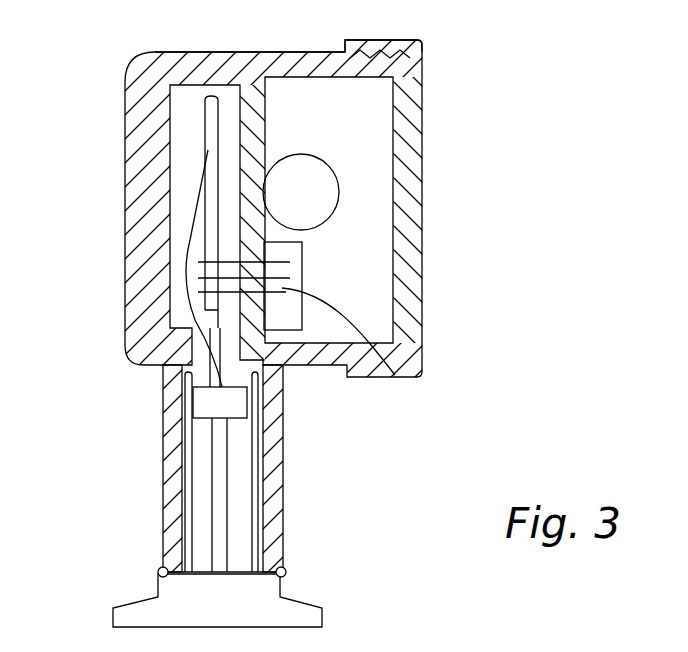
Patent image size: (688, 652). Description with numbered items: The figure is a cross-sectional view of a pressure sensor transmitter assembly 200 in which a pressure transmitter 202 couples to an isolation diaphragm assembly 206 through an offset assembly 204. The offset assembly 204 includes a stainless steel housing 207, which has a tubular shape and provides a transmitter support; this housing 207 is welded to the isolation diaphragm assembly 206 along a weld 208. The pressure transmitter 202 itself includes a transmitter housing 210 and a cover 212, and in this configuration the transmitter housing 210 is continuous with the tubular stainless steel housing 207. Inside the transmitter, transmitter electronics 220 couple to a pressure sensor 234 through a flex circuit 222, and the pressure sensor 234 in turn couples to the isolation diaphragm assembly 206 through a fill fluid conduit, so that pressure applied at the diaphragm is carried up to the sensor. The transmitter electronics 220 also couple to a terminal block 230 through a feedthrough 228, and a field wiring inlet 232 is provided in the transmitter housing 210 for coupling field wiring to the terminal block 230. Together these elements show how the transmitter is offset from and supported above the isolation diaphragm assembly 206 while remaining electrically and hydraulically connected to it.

The pressure sensor transmitter assembly 200 is at (452, 198).
The pressure transmitter 202 is at (432, 268).
The offset assembly 204 is at (300, 489).
The isolation diaphragm assembly 206 is at (305, 600).
The stainless steel housing 207 is at (162, 430).
The weld 208 is at (158, 572).
The transmitter housing 210 is at (231, 52).
The cover 212 is at (420, 54).
The transmitter electronics 220 is at (208, 148).
The flex circuit 222 is at (188, 240).
The feedthrough 228 is at (395, 375).
The terminal block 230 is at (310, 275).
The field wiring inlet 232 is at (305, 153).
The pressure sensor 234 is at (210, 387).